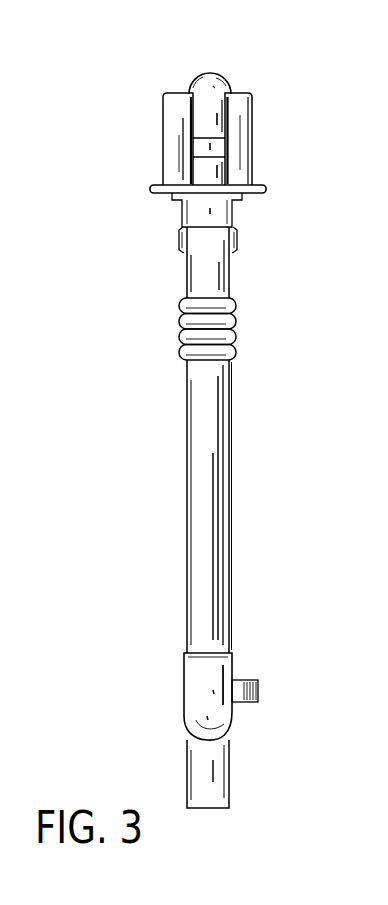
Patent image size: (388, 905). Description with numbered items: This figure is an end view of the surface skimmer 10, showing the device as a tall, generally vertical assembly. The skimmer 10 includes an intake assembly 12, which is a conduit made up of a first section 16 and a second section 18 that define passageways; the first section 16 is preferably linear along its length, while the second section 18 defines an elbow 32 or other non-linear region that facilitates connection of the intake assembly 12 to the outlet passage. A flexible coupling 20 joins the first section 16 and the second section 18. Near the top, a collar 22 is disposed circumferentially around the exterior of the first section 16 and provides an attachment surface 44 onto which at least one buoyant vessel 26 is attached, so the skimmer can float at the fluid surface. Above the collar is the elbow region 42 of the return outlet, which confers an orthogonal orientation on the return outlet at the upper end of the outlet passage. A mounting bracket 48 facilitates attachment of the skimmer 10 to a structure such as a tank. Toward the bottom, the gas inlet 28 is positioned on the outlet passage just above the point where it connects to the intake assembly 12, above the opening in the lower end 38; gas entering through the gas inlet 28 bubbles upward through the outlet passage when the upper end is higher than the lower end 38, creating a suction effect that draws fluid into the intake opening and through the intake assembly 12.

The surface skimmer 10 is at (130, 360).
The intake assembly 12 is at (187, 478).
The first section 16 is at (232, 276).
The second section 18 is at (230, 440).
The flexible coupling 20 is at (236, 330).
The collar 22 is at (266, 192).
The buoyant vessel 26 is at (164, 97).
The gas inlet 28 is at (247, 680).
The elbow 32 is at (184, 704).
The lower end 38 is at (232, 762).
The elbow region 42 is at (209, 72).
The attachment surface 44 is at (268, 186).
The mounting bracket 48 is at (178, 232).